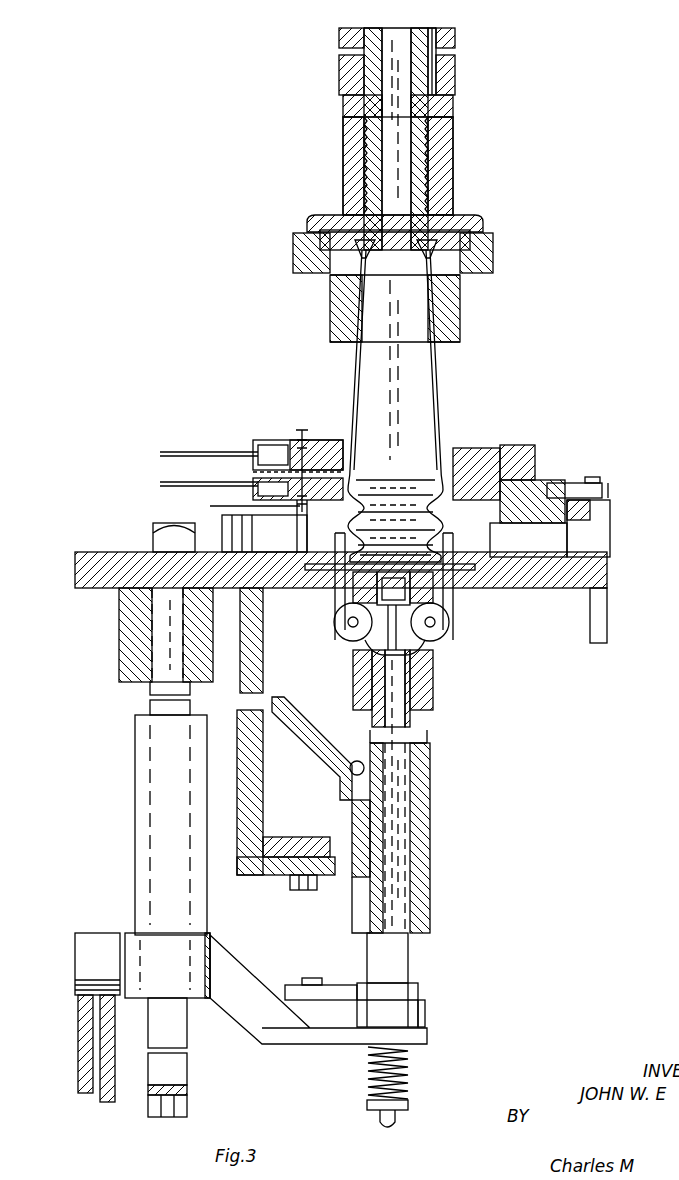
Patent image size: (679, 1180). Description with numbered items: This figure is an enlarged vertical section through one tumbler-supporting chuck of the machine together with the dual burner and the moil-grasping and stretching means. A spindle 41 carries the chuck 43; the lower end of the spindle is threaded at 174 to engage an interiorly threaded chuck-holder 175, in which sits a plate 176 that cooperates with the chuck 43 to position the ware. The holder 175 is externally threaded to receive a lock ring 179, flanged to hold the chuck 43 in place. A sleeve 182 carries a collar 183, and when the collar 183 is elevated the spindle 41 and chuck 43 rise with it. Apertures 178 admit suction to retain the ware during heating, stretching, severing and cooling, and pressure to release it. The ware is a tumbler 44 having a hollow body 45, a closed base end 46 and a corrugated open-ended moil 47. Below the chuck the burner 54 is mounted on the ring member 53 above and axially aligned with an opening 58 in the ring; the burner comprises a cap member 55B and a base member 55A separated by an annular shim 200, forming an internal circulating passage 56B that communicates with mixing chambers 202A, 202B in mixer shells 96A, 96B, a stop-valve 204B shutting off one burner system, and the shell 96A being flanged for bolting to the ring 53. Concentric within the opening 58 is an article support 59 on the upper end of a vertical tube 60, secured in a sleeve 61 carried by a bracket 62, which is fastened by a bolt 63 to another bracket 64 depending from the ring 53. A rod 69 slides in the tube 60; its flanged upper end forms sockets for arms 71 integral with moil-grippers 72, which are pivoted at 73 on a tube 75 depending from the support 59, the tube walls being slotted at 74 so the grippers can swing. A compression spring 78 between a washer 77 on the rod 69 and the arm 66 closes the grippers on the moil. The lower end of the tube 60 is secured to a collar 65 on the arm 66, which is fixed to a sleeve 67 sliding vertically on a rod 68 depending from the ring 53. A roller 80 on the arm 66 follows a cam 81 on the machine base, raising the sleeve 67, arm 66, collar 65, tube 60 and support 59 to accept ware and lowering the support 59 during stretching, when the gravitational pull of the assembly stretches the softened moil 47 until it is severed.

The spindle 41 is at (425, 29).
The sleeve 182 is at (455, 44).
The collar 183 is at (455, 79).
The threaded lower end of spindle 174 is at (442, 136).
The chuck-holder 175 is at (453, 174).
The apertures 178 is at (440, 216).
The plate 176 is at (481, 229).
The lock ring 179 is at (494, 274).
The chuck 43 is at (462, 311).
The closed base end 46 is at (396, 262).
The tumbler 44 is at (447, 364).
The hollow body 45 is at (438, 399).
The moil 47 is at (441, 521).
The stop-valve 204B is at (300, 432).
The internal circulating passage 56B is at (312, 441).
The mixing chamber 202B is at (262, 452).
The mixing chamber 202A is at (215, 506).
The opening 58 is at (312, 577).
The moil-grippers 72 is at (338, 534).
The article support 59 is at (470, 580).
The slots 74 is at (386, 613).
The pivot 73 is at (349, 623).
The arms 71 is at (428, 646).
The tube 75 is at (435, 684).
The vertical tube 60 is at (412, 727).
The rod 69 is at (430, 752).
The sleeve 61 is at (432, 779).
The bracket 62 is at (326, 764).
The bracket 64 is at (265, 666).
The bolt 63 is at (301, 892).
The rod 68 is at (150, 710).
The sleeve 67 is at (208, 911).
The roller 80 is at (95, 935).
The cam 81 is at (82, 1040).
The arm 66 is at (330, 1031).
The collar 65 is at (428, 1006).
The compression spring 78 is at (410, 1066).
The washer 77 is at (410, 1101).
The ring member 53 is at (95, 589).
The cap member 55B is at (479, 448).
The base member 55A is at (515, 480).
The mixer shell 96B is at (536, 451).
The annular shim 200 is at (560, 483).
The mixer shell 96A is at (610, 474).
The burner 54 is at (610, 483).